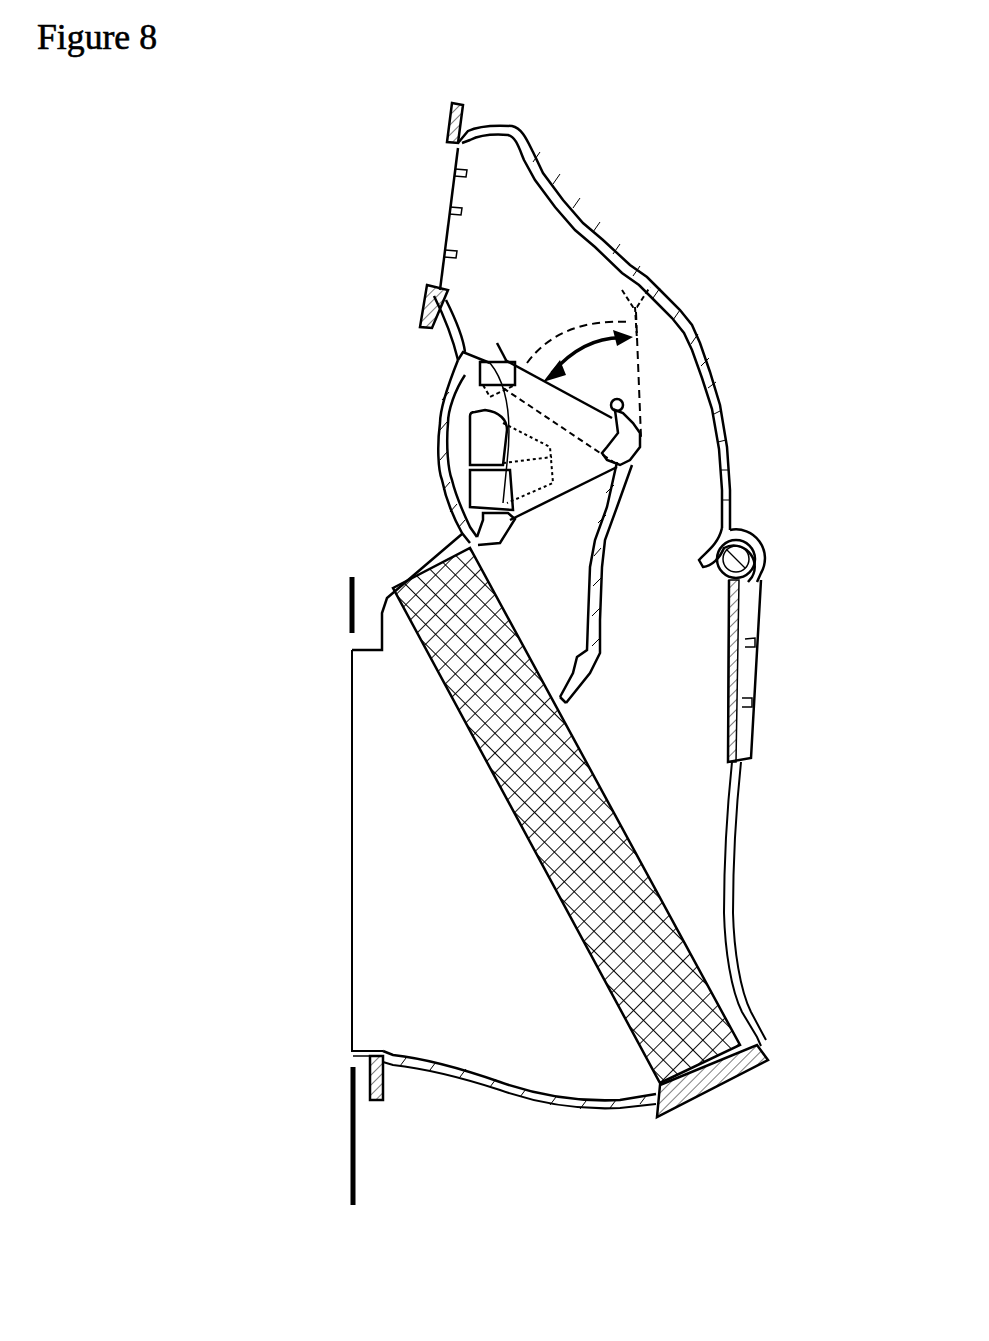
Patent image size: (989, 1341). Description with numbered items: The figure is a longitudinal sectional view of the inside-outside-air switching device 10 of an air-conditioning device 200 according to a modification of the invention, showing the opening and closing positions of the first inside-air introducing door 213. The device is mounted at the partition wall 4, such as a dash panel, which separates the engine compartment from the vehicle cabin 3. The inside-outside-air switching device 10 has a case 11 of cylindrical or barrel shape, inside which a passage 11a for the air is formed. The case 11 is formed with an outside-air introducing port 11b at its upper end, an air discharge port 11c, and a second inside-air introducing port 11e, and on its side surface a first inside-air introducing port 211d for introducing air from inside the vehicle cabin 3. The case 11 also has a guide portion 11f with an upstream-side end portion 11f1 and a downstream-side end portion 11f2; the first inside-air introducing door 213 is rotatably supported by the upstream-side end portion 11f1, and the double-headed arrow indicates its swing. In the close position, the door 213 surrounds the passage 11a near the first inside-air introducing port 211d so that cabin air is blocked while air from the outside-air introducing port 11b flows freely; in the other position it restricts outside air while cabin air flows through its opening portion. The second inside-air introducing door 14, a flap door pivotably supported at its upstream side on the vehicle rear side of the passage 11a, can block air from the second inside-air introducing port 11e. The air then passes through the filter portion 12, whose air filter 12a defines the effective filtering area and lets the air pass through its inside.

The air-conditioning device 200 is at (316, 112).
The inside-outside-air switching device 10 is at (660, 190).
The case 11 is at (690, 318).
The passage 11a is at (565, 265).
The outside-air introducing port 11b is at (444, 258).
The air discharge port 11c is at (352, 958).
The second inside-air introducing port 11e is at (752, 718).
The guide portion 11f is at (620, 512).
The upstream-side end portion 11f1 is at (622, 405).
The downstream-side end portion 11f2 is at (560, 695).
The filter portion 12 is at (728, 1083).
The air filter 12a is at (620, 963).
The second inside-air introducing door 14 is at (750, 643).
The first inside-air introducing port 211d is at (467, 440).
The first inside-air introducing door 213 is at (515, 410).
The partition wall 4 is at (355, 1160).
The vehicle cabin 3 is at (521, 1244).